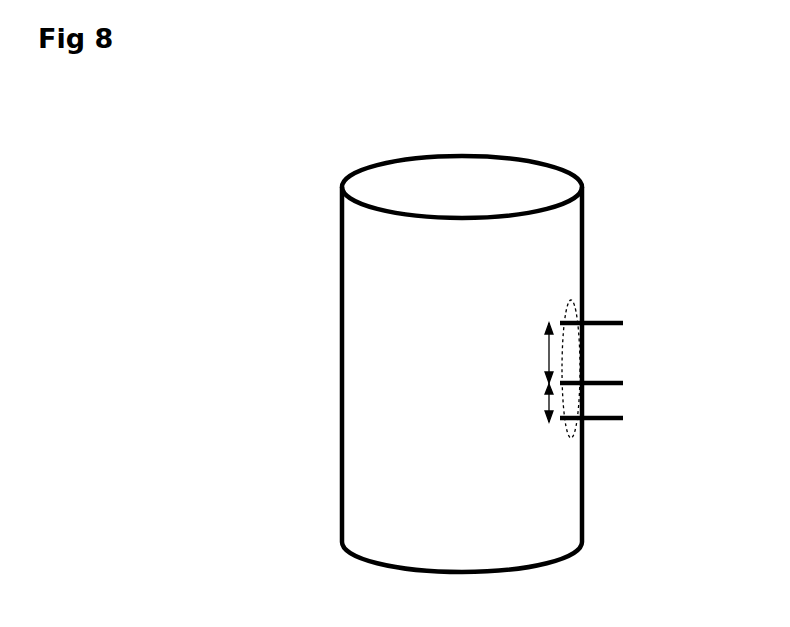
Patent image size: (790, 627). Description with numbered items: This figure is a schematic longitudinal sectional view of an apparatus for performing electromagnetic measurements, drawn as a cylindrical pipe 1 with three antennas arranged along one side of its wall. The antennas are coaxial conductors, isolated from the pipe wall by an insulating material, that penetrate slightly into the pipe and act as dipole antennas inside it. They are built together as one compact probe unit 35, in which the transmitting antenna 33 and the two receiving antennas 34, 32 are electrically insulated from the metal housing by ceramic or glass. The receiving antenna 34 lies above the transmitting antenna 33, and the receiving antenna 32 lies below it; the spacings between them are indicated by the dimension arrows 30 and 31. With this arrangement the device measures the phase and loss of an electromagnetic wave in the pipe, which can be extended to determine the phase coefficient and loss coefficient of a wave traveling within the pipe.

The cylindrical body 1 is at (342, 352).
The first distance 30 is at (548, 355).
The second distance 31 is at (548, 405).
The receiving antenna 32 is at (620, 420).
The transmitting antenna 33 is at (623, 383).
The receiving antenna 34 is at (623, 323).
The compact probe unit 35 is at (568, 300).